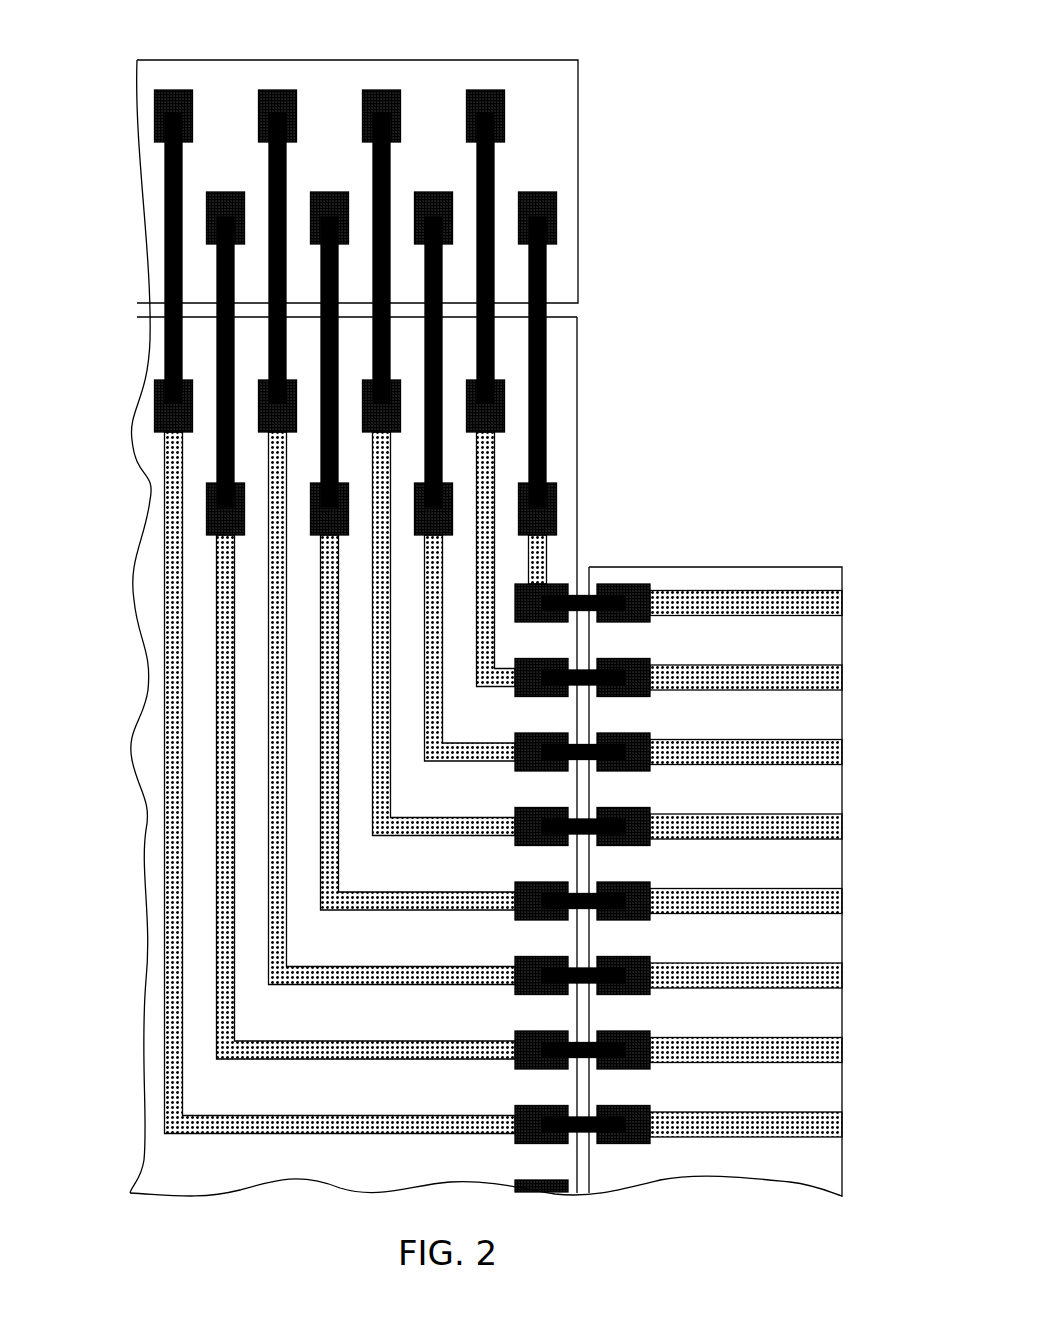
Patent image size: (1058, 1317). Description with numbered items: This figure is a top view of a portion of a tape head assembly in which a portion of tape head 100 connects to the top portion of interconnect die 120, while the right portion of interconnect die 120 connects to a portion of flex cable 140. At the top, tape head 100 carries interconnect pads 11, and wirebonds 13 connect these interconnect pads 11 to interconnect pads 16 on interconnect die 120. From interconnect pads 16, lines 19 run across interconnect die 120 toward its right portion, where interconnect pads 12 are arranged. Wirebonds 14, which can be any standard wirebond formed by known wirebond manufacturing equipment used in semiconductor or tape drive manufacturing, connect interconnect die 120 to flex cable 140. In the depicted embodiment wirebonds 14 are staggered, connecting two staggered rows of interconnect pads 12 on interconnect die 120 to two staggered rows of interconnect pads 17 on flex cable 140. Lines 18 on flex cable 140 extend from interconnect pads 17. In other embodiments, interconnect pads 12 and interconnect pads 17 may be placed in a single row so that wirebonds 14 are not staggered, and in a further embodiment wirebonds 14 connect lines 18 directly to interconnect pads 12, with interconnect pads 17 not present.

The interconnect pads 11 is at (531, 192).
The wirebonds 13 is at (321, 292).
The interconnect pads 16 is at (310, 493).
The lines 19 is at (165, 793).
The interconnect pads 12 is at (550, 584).
The wirebonds 14 is at (583, 668).
The interconnect pads 17 is at (638, 658).
The lines 18 is at (842, 677).
The tape head 100 is at (562, 116).
The interconnect die 120 is at (143, 1071).
The flex cable 140 is at (842, 713).